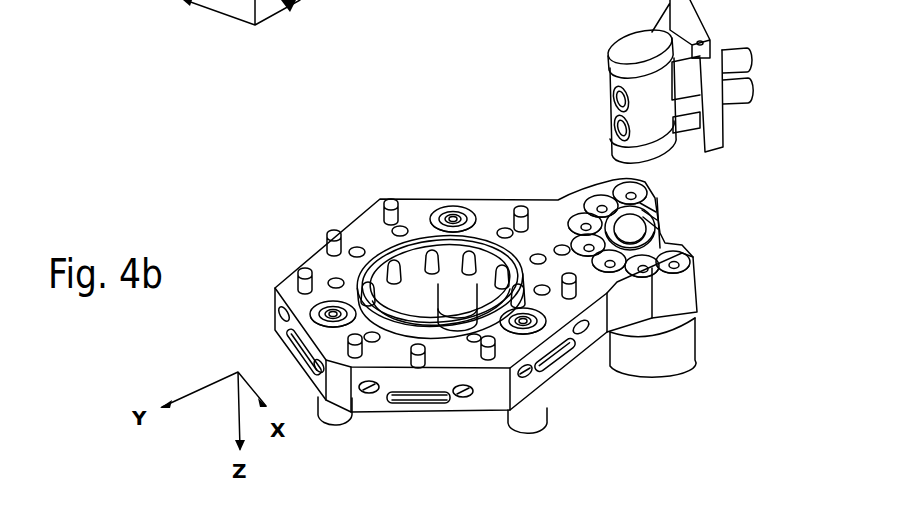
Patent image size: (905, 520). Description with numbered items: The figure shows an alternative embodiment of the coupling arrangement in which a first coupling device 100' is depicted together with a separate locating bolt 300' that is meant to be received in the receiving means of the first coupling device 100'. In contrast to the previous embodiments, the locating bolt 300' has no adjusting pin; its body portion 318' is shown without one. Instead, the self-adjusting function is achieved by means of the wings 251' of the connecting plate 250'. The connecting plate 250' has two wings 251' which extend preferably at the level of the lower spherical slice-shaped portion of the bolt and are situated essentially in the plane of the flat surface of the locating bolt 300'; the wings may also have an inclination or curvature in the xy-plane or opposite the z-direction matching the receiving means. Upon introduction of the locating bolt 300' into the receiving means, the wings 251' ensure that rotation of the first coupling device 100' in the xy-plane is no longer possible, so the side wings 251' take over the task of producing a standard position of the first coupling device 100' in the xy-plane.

The first coupling device 100' is at (471, 291).
The locating bolt 300' is at (642, 101).
The cylindrical body 318' is at (612, 89).
The connecting plate 250' is at (713, 76).
The wings 251' is at (704, 125).